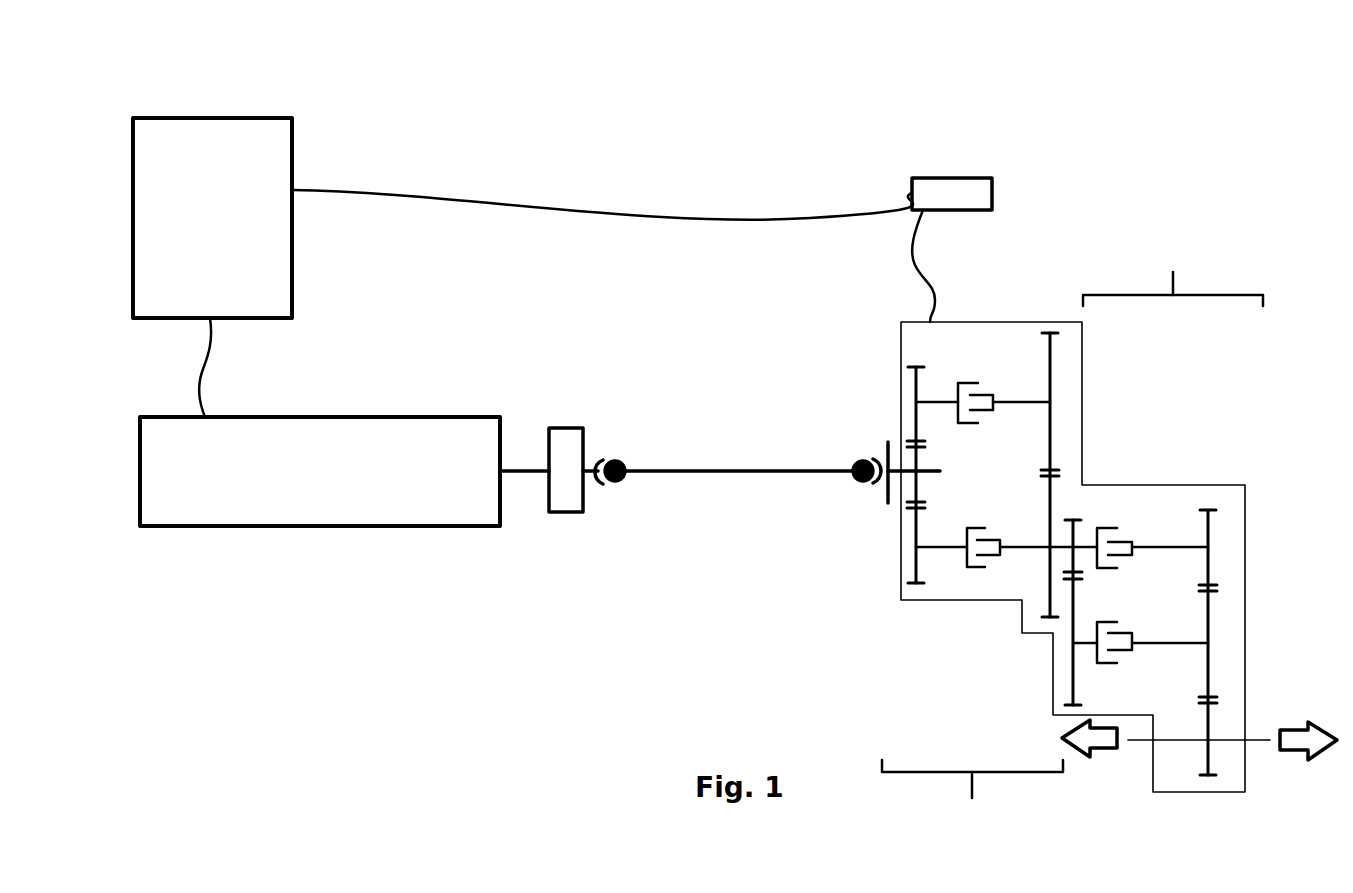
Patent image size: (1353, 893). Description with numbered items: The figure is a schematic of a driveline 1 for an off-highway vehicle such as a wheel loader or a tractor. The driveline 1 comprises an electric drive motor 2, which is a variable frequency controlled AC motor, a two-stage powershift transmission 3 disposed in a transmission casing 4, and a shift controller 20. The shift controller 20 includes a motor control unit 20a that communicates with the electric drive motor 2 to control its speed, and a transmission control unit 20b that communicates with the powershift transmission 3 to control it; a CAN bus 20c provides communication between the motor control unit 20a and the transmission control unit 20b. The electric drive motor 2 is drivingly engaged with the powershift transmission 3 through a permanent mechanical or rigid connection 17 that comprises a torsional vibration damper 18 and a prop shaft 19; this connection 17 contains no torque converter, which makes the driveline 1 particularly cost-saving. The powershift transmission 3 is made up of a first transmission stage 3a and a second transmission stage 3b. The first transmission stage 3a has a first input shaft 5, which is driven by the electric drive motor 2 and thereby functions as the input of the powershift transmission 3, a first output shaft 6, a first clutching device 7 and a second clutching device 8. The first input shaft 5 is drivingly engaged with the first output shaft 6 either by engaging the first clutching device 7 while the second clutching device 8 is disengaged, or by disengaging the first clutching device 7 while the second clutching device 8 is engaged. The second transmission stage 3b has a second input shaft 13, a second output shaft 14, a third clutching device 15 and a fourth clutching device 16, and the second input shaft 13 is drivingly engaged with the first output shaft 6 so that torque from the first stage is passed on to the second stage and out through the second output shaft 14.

The driveline 1 is at (445, 720).
The electric drive motor 2 is at (330, 526).
The powershift transmission 3 is at (1095, 815).
The first transmission stage 3a is at (972, 802).
The second transmission stage 3b is at (1173, 265).
The transmission casing 4 is at (1246, 603).
The first input shaft 5 is at (940, 473).
The first output shaft 6 is at (1062, 505).
The first clutching device 7 is at (990, 590).
The second clutching device 8 is at (977, 350).
The second input shaft 13 is at (1100, 508).
The second output shaft 14 is at (1258, 740).
The third clutching device 15 is at (1108, 677).
The fourth clutching device 16 is at (1135, 518).
The connection 17 is at (707, 365).
The torsional vibration damper 18 is at (558, 512).
The prop shaft 19 is at (712, 478).
The shift controller 20 is at (593, 125).
The motor control unit 20a is at (200, 118).
The transmission control unit 20b is at (948, 178).
The CAN bus 20c is at (625, 193).